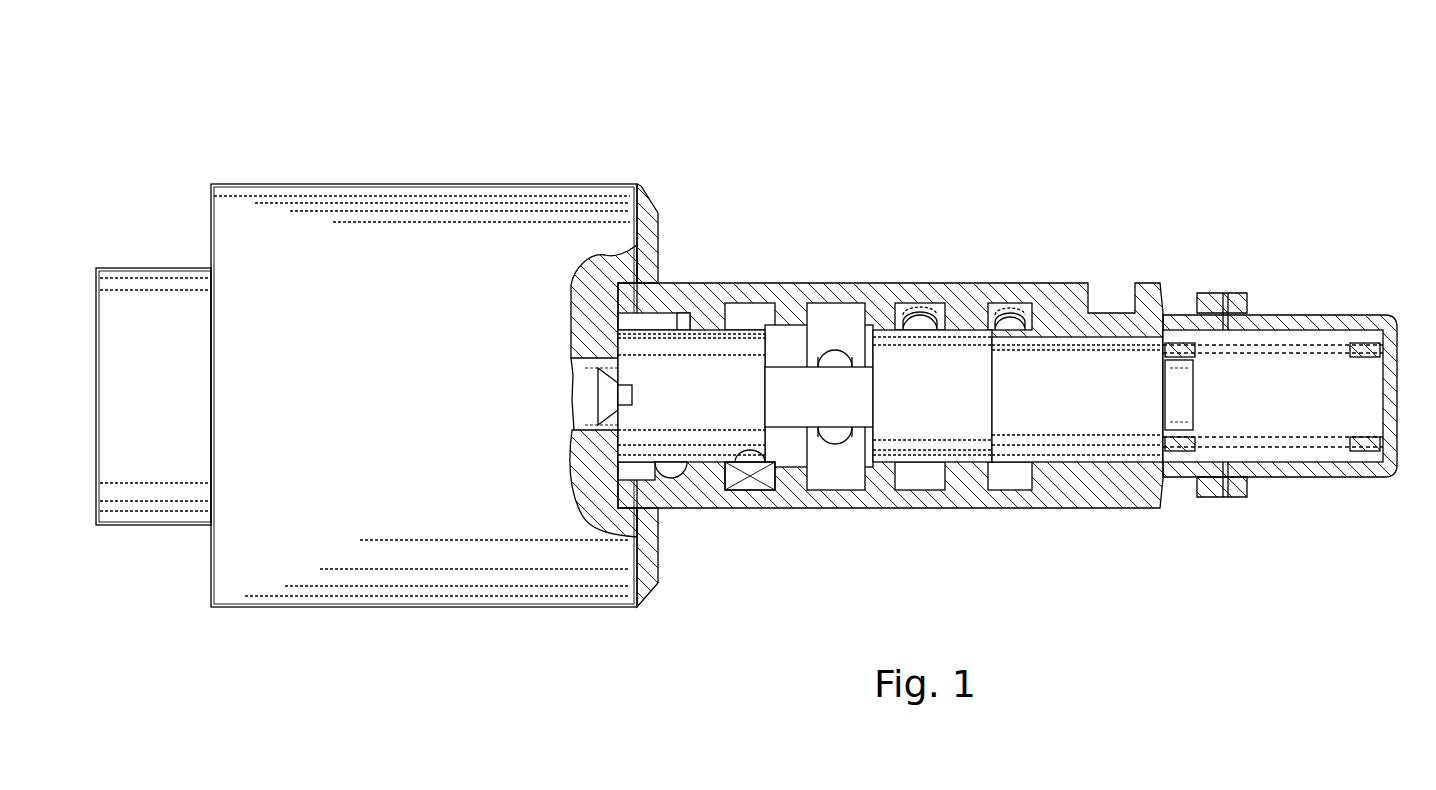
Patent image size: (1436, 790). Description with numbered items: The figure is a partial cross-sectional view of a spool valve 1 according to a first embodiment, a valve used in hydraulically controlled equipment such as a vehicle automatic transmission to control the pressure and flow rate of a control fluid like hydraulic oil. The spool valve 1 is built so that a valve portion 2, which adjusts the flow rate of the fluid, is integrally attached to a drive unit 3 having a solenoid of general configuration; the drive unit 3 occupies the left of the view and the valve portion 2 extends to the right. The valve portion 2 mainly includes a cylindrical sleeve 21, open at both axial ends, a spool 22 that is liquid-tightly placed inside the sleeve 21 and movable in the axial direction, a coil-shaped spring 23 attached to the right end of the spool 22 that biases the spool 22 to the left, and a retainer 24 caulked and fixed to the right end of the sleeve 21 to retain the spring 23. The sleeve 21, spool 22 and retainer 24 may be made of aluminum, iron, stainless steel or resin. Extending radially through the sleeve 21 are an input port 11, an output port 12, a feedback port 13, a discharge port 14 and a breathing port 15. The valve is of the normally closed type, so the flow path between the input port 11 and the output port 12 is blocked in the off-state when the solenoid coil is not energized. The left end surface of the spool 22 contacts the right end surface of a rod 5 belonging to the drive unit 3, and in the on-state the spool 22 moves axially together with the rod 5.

The spool valve 1 is at (1016, 140).
The valve portion 2 is at (1207, 284).
The drive unit 3 is at (312, 181).
The rod 5 is at (585, 305).
The input port 11 is at (925, 303).
The output port 12 is at (840, 340).
The feedback port 13 is at (1012, 303).
The discharge port 14 is at (770, 460).
The breathing port 15 is at (690, 462).
The sleeve 21 is at (1143, 283).
The spool 22 is at (680, 335).
The spring 23 is at (1358, 335).
The retainer 24 is at (1400, 316).